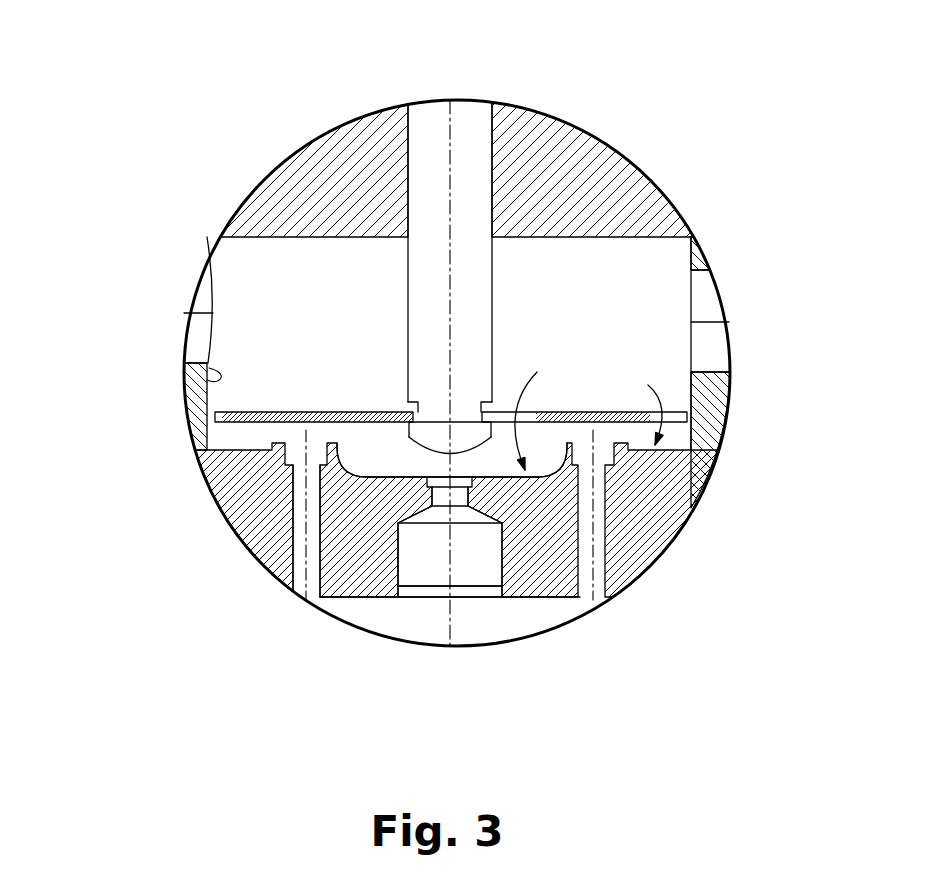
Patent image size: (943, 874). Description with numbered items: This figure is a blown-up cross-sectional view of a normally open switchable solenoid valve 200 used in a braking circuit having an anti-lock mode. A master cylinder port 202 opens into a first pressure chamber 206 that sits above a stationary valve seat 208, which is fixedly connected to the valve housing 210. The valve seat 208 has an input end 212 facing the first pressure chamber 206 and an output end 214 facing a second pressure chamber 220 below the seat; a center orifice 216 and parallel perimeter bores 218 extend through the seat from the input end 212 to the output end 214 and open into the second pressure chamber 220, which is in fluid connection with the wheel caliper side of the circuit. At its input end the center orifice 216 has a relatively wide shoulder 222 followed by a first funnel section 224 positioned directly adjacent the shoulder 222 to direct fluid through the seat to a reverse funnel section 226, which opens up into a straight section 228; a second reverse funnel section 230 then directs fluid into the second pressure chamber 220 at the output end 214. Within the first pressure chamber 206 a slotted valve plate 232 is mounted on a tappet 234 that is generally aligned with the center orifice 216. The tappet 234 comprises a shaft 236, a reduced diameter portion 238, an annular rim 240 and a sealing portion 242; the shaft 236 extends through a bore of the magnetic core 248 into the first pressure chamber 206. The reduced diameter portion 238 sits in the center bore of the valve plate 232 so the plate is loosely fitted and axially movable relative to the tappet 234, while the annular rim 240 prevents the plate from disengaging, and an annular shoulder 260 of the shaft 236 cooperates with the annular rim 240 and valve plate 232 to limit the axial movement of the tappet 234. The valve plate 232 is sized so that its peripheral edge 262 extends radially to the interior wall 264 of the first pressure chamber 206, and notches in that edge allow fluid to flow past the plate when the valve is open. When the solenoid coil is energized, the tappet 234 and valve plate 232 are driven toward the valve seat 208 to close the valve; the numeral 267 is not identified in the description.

The switchable solenoid valve 200 is at (168, 452).
The master cylinder port 202 is at (198, 293).
The first pressure chamber 206 is at (517, 304).
The stationary valve seat 208 is at (250, 517).
The valve housing 210 is at (703, 458).
The input end 212 is at (570, 445).
The output end 214 is at (523, 597).
The center orifice 216 is at (468, 608).
The parallel perimeter bores 218 is at (300, 535).
The second pressure chamber 220 is at (415, 622).
The shoulder 222 is at (378, 475).
The first funnel section 224 is at (440, 442).
The reverse funnel section 226 is at (443, 513).
The straight section 228 is at (560, 598).
The second reverse funnel section 230 is at (482, 588).
The slotted valve plate 232 is at (215, 415).
The tappet 234 is at (463, 92).
The shaft 236 is at (455, 352).
The reduced diameter portion 238 is at (430, 412).
The annular rim 240 is at (467, 465).
The sealing portion 242 is at (330, 530).
The magnetic core 248 is at (347, 162).
The annular shoulder 260 is at (413, 403).
The peripheral edge 262 is at (693, 415).
The interior wall 264 is at (208, 365).
The flow arrow 267 is at (648, 385).